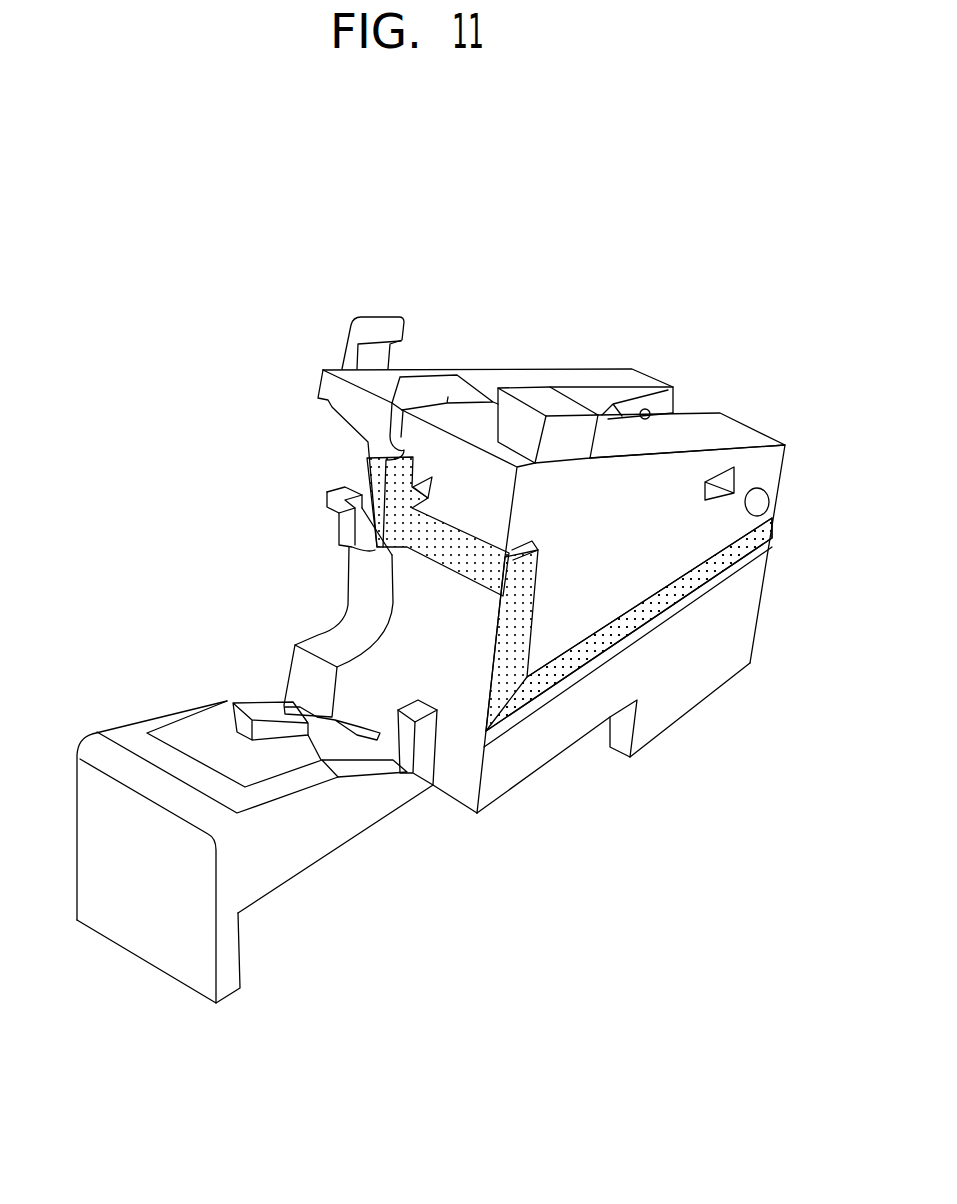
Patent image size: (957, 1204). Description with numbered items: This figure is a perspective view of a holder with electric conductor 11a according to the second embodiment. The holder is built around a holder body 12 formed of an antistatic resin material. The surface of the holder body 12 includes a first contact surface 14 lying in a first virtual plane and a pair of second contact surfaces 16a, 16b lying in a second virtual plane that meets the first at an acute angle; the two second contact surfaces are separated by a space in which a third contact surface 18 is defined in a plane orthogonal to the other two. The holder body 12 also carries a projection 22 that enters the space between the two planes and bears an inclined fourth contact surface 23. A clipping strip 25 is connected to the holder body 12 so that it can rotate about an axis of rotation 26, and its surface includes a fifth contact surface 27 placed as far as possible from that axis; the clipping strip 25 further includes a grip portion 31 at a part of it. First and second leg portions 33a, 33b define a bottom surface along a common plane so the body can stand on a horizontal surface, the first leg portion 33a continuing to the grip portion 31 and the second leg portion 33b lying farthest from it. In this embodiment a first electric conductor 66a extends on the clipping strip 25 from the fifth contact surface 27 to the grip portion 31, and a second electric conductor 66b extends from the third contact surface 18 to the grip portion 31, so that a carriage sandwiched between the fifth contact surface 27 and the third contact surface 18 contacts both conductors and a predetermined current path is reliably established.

The holder with electric conductor 11a is at (182, 352).
The holder body 12 is at (322, 370).
The first contact surface 14 is at (127, 735).
The second contact surface 16a is at (402, 745).
The second contact surface 16b is at (303, 673).
The third contact surface 18 is at (370, 440).
The projection 22 is at (340, 548).
The fourth contact surface 23 is at (340, 518).
The clipping strip 25 is at (765, 474).
The axis of rotation 26 is at (648, 412).
The fifth contact surface 27 is at (410, 502).
The grip portion 31 is at (768, 553).
The first leg portion 33a is at (693, 695).
The second leg portion 33b is at (223, 975).
The first electric conductor 66a is at (640, 610).
The second electric conductor 66b is at (365, 470).